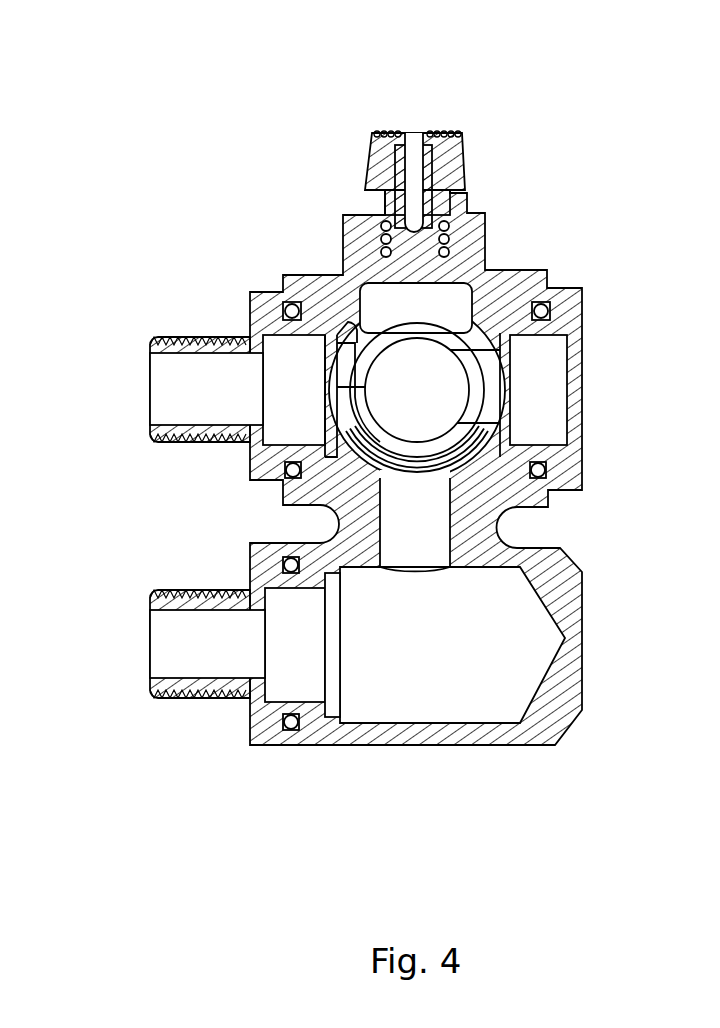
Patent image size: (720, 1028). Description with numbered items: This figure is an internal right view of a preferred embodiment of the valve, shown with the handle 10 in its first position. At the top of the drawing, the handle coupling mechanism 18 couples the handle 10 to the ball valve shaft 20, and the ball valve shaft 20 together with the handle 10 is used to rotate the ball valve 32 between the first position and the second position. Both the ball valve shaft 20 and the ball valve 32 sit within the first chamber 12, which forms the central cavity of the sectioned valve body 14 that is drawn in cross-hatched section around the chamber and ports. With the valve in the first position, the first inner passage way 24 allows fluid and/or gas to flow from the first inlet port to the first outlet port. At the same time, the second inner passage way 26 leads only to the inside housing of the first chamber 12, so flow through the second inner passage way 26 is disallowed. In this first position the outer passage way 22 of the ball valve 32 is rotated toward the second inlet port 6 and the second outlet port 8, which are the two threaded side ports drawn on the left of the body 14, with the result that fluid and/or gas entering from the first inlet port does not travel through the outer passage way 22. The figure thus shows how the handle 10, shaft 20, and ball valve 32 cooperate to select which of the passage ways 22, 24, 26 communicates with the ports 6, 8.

The second inlet port 6 is at (165, 383).
The second outlet port 8 is at (155, 652).
The handle 10 is at (365, 135).
The first chamber 12 is at (468, 312).
The valve body 14 is at (501, 748).
The handle coupling mechanism 18 is at (420, 133).
The ball valve shaft 20 is at (415, 283).
The outer passage way 22 is at (350, 418).
The first inner passage way 24 is at (403, 403).
The second inner passage way 26 is at (487, 388).
The ball valve 32 is at (350, 335).